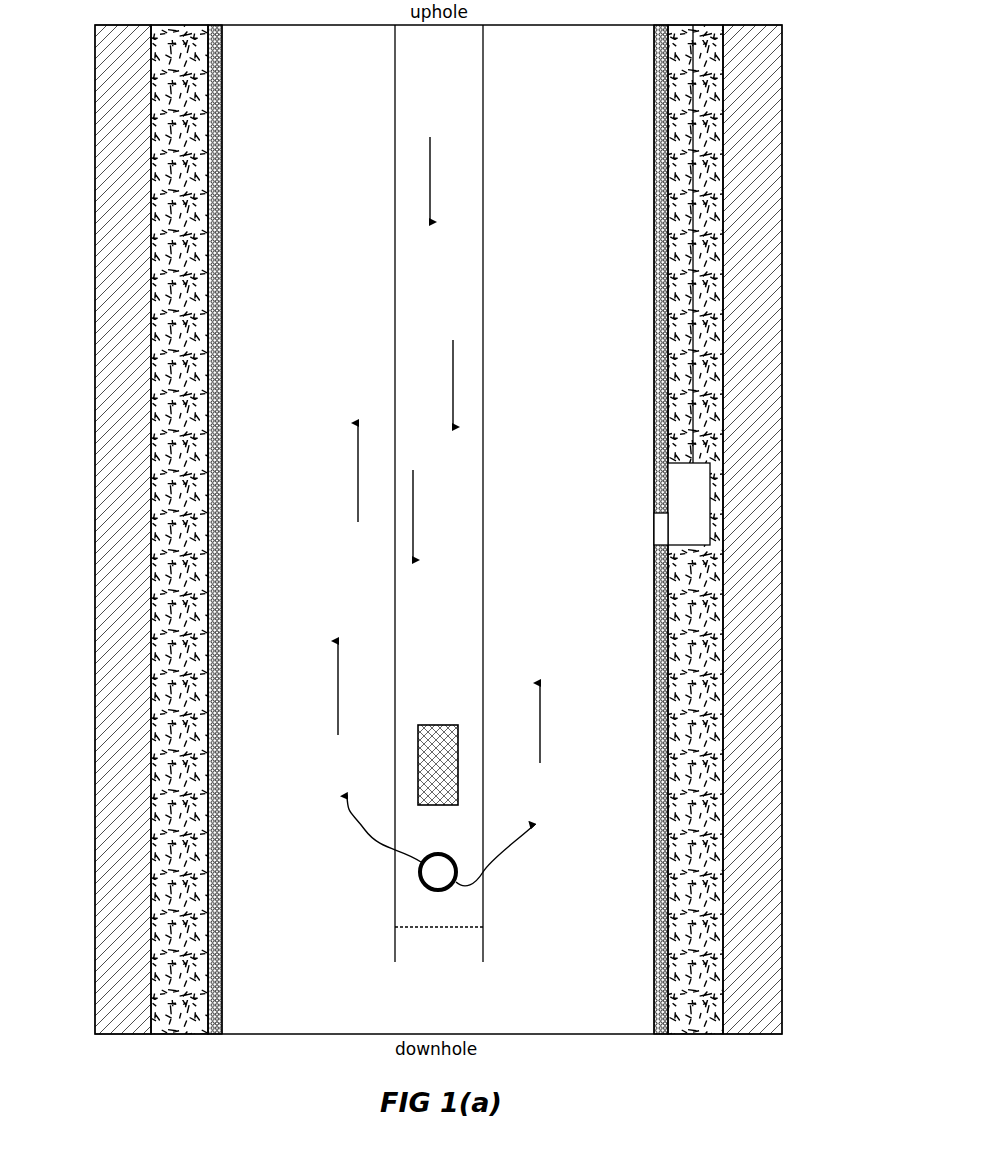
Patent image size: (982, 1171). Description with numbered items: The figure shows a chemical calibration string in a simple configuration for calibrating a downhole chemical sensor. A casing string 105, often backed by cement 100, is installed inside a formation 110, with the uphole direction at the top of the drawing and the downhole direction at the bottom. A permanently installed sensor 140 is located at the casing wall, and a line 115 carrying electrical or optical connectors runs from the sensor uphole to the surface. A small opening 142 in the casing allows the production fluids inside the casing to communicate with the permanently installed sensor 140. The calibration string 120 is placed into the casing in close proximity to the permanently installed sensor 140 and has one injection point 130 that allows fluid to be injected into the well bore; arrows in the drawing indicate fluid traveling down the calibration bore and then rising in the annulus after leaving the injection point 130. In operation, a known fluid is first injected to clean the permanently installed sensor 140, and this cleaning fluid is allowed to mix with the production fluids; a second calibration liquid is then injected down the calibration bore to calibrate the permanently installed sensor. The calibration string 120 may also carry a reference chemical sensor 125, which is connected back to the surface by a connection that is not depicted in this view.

The cement 100 is at (178, 215).
The casing string 105 is at (215, 276).
The formation 110 is at (122, 462).
The line 115 is at (693, 150).
The calibration string 120 is at (393, 108).
The reference chemical sensor 125 is at (428, 765).
The injection point 130 is at (420, 884).
The permanently installed sensor 140 is at (700, 495).
The small opening 142 is at (668, 528).